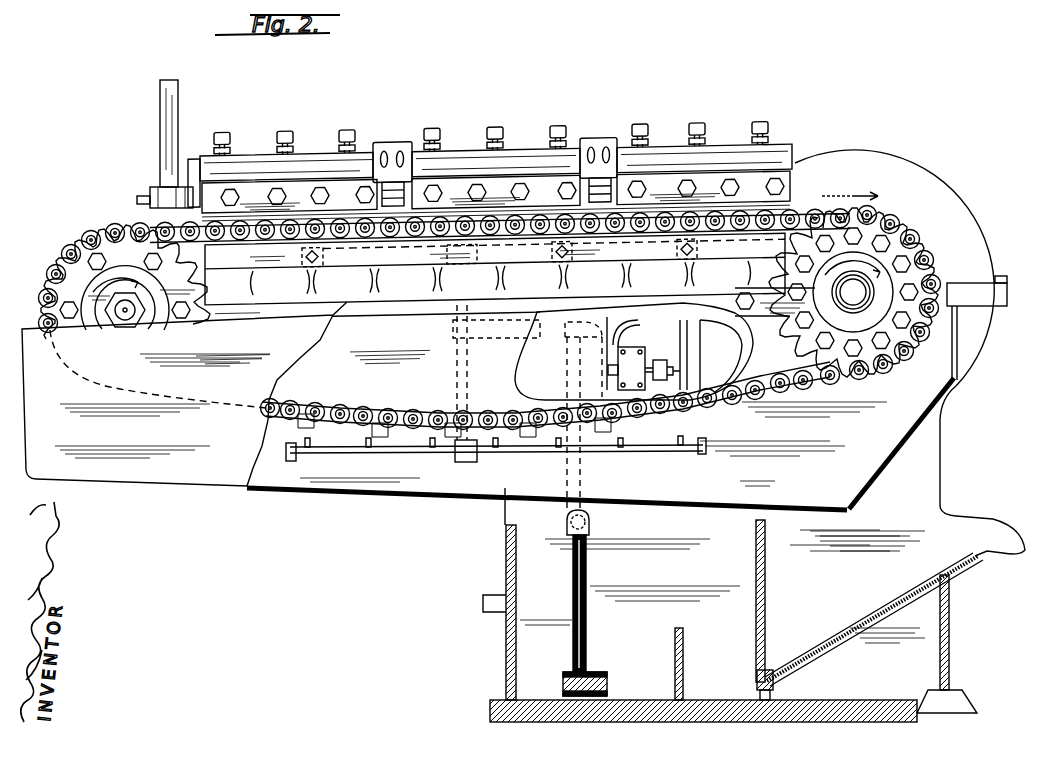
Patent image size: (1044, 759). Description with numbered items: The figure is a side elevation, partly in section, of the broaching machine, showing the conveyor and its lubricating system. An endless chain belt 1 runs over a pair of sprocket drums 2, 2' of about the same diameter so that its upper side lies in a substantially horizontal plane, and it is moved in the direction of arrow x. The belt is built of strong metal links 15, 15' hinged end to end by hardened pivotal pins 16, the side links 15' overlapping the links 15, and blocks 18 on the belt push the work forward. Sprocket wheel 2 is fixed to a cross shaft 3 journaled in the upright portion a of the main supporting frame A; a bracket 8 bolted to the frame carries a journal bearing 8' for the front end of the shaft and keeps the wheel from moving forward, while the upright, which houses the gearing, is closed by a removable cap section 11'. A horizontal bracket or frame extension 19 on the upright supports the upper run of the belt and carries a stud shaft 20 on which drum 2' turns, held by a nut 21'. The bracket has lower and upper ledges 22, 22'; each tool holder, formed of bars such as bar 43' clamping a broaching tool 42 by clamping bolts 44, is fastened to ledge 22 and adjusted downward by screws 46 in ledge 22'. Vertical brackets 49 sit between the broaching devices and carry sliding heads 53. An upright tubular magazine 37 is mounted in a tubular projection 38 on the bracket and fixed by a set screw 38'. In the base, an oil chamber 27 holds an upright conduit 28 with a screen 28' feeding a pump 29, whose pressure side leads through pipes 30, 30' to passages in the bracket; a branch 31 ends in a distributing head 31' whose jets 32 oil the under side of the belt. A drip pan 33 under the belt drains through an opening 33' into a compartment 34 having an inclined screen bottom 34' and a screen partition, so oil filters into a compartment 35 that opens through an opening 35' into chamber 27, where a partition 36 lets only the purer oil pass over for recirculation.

The endless chain belt 1 is at (61, 263).
The sprocket drum 2 is at (856, 281).
The sprocket drum 2' is at (127, 265).
The cross shaft 3 is at (853, 292).
The bracket 8 is at (665, 344).
The journal bearing 8' is at (942, 305).
The cap section 11' is at (894, 263).
The link 15 is at (530, 332).
The link 15' is at (454, 309).
The pivotal pin 16 is at (358, 226).
The block 18 is at (42, 297).
The horizontal bracket or frame extension 19 is at (291, 272).
The stud shaft 20 is at (124, 320).
The nut 21' is at (139, 321).
The ledge 22 is at (406, 280).
The ledge 22' is at (490, 161).
The oil containing chamber 27 is at (506, 628).
The upright conduit 28 is at (591, 591).
The screen 28' is at (597, 684).
The pump 29 is at (640, 355).
The pipe 30 is at (469, 394).
The pipe 30' is at (658, 272).
The branch 31 is at (450, 372).
The distributing head 31' is at (459, 462).
The jet 32 is at (300, 441).
The drip pan 33 is at (463, 472).
The opening 33' is at (602, 408).
The compartment 34 is at (845, 562).
The inclined screen bottom 34' is at (874, 619).
The compartment 35 is at (906, 632).
The opening 35' is at (749, 685).
The partition 36 is at (684, 643).
The tubular magazine 37 is at (162, 101).
The tubular projection 38 is at (157, 186).
The set screw 38' is at (126, 198).
The broaching tool 42 is at (272, 232).
The bar 43' is at (496, 166).
The clamping bolt 44 is at (502, 193).
The screw 46 is at (287, 140).
The vertical bracket 49 is at (394, 166).
The head 53 is at (392, 193).
The upright portion a is at (938, 448).
The arrow x is at (850, 189).
The main supporting frame A is at (515, 700).